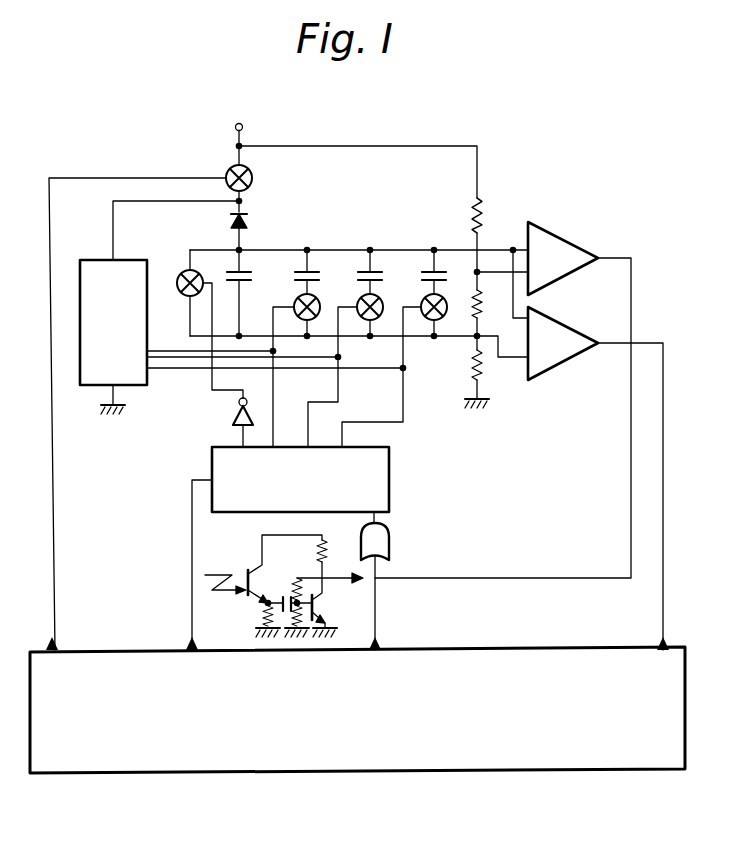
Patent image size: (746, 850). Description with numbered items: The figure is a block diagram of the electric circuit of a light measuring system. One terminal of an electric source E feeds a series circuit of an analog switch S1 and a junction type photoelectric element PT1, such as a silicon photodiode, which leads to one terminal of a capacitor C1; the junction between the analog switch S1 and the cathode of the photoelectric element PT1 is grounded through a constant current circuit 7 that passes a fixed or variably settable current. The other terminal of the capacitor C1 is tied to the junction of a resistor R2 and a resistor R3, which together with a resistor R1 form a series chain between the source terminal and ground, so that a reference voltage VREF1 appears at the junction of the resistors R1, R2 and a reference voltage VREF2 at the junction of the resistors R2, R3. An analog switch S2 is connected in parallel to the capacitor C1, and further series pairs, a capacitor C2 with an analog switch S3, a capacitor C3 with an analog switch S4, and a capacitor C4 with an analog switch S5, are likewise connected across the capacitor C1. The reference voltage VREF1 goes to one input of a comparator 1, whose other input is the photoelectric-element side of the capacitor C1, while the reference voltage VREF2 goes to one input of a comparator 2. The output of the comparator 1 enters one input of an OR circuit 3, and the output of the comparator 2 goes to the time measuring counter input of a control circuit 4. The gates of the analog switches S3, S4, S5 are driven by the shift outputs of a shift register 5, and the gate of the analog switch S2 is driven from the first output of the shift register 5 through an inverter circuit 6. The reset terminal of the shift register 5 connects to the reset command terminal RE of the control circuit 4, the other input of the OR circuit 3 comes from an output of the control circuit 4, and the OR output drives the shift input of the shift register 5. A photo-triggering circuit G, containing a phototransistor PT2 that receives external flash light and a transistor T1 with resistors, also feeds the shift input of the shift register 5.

The comparator 1 is at (563, 258).
The comparator 2 is at (563, 343).
The OR circuit 3 is at (390, 543).
The control circuit 4 is at (357, 710).
The shift register 5 is at (390, 460).
The inverter circuit 6 is at (232, 417).
The constant current circuit 7 is at (113, 322).
The electric source E is at (243, 125).
The analog switch S1 is at (253, 178).
The analog switch S2 is at (182, 268).
The analog switch S3 is at (318, 317).
The analog switch S4 is at (381, 317).
The analog switch S5 is at (445, 317).
The junction type photoelectric element PT1 is at (247, 218).
The phototransistor PT2 is at (260, 567).
The capacitor C1 is at (250, 270).
The capacitor C2 is at (322, 272).
The capacitor C3 is at (383, 278).
The capacitor C4 is at (446, 270).
The resistor R1 is at (484, 208).
The resistor R2 is at (496, 290).
The resistor R3 is at (470, 370).
The reference voltage VREF1 is at (477, 272).
The reference voltage VREF2 is at (478, 336).
The photo-triggering circuit G is at (284, 586).
The transistor T1 is at (327, 605).
The reset command terminal RE is at (174, 618).